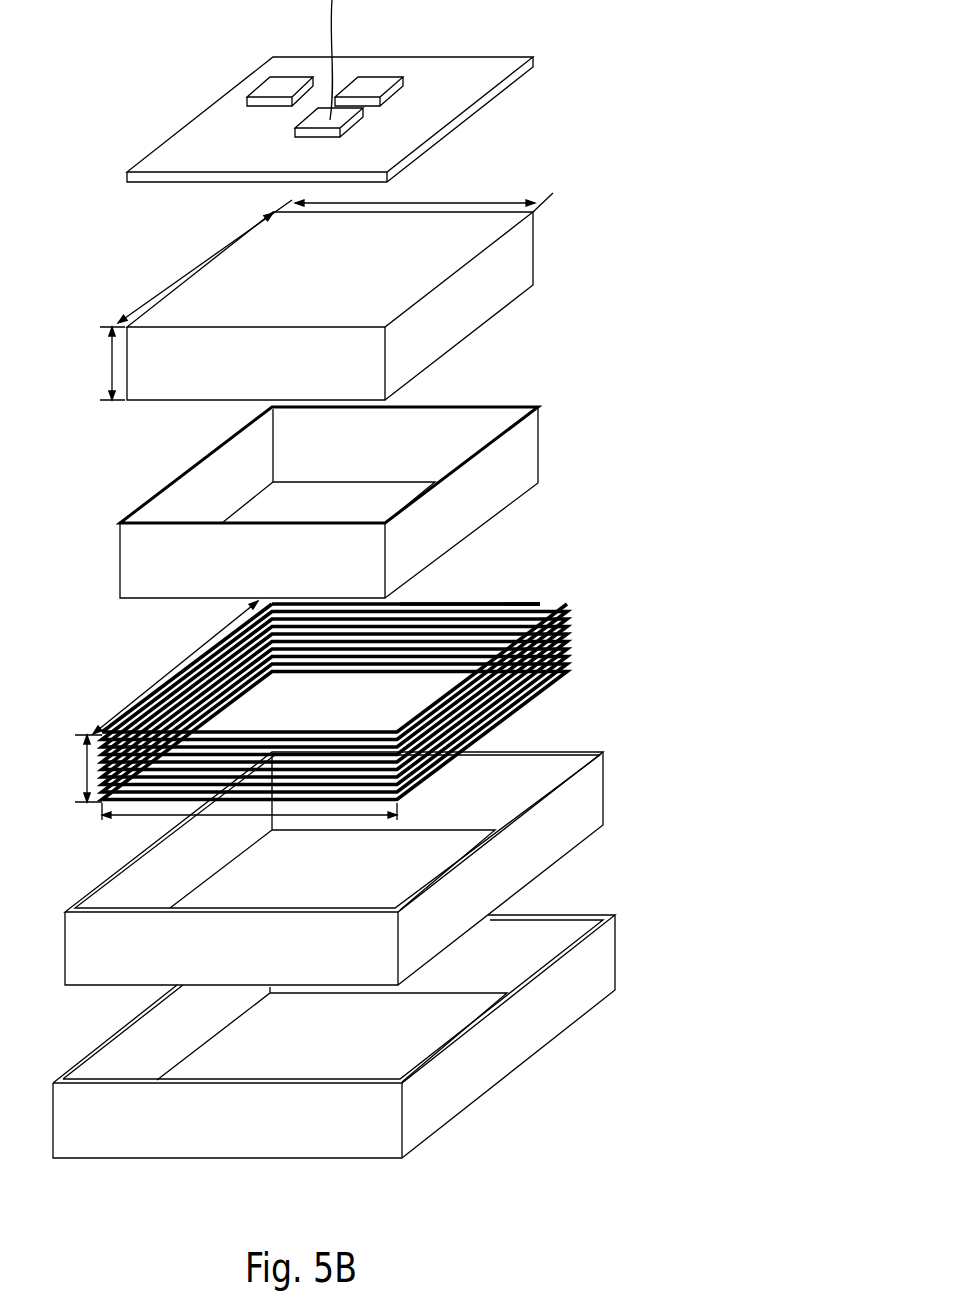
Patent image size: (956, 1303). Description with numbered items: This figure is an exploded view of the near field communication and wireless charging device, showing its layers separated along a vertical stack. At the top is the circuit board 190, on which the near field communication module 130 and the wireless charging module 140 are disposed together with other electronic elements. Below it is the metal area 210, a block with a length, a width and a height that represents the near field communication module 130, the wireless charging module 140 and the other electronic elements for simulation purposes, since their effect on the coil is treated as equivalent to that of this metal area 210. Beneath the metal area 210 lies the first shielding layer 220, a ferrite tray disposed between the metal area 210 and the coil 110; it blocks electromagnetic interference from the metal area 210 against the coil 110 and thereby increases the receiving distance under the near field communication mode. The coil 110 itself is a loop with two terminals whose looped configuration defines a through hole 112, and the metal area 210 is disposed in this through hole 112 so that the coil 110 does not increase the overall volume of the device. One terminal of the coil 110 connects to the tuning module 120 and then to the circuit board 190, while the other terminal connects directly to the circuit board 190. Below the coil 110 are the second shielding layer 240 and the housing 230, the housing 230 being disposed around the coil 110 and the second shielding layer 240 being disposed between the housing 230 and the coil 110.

The coil 110 is at (573, 627).
The through hole 112 is at (478, 598).
The tuning module 120 is at (545, 592).
The near field communication module 130 is at (282, 88).
The wireless charging module 140 is at (372, 87).
The circuit board 190 is at (533, 58).
The metal area 210 is at (523, 252).
The first shielding layer 220 is at (522, 447).
The housing 230 is at (600, 958).
The second shielding layer 240 is at (588, 792).